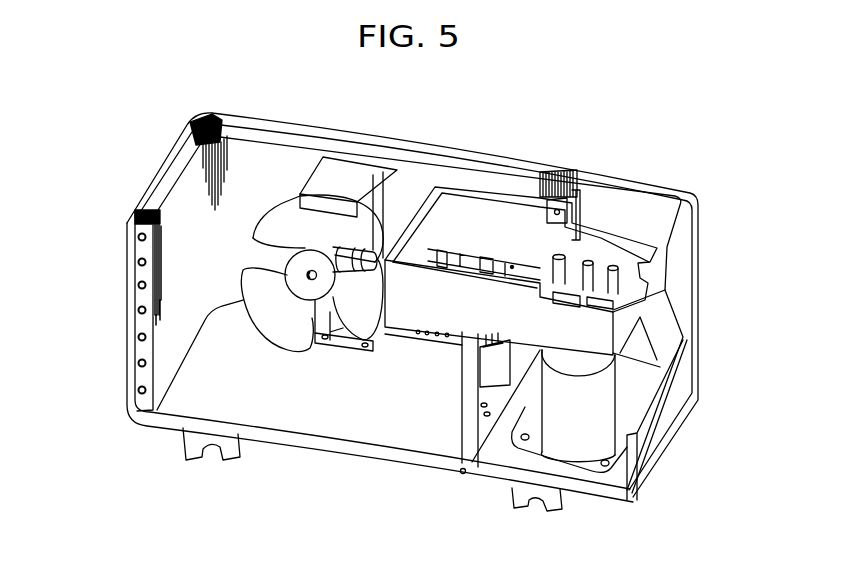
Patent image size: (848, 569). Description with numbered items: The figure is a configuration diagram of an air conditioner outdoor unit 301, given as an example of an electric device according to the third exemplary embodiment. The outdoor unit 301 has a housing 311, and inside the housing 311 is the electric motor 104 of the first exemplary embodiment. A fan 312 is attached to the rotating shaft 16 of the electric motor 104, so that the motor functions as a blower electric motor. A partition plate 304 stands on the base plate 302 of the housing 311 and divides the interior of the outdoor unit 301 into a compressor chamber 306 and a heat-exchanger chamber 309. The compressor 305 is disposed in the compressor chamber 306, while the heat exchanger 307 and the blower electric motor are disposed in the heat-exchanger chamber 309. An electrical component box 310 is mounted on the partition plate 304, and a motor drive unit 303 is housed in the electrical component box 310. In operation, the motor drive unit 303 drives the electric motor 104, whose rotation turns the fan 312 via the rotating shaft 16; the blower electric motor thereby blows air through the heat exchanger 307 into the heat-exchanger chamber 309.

The rotating shaft 16 is at (312, 275).
The electric motor 104 is at (376, 200).
The air conditioner outdoor unit 301 is at (132, 287).
The base plate 302 is at (317, 413).
The motor drive unit 303 is at (452, 257).
The partition plate 304 is at (468, 420).
The compressor 305 is at (603, 410).
The compressor chamber 306 is at (507, 453).
The heat exchanger 307 is at (307, 138).
The heat-exchanger chamber 309 is at (175, 402).
The electrical component box 310 is at (657, 247).
The housing 311 is at (588, 172).
The fan 312 is at (240, 275).